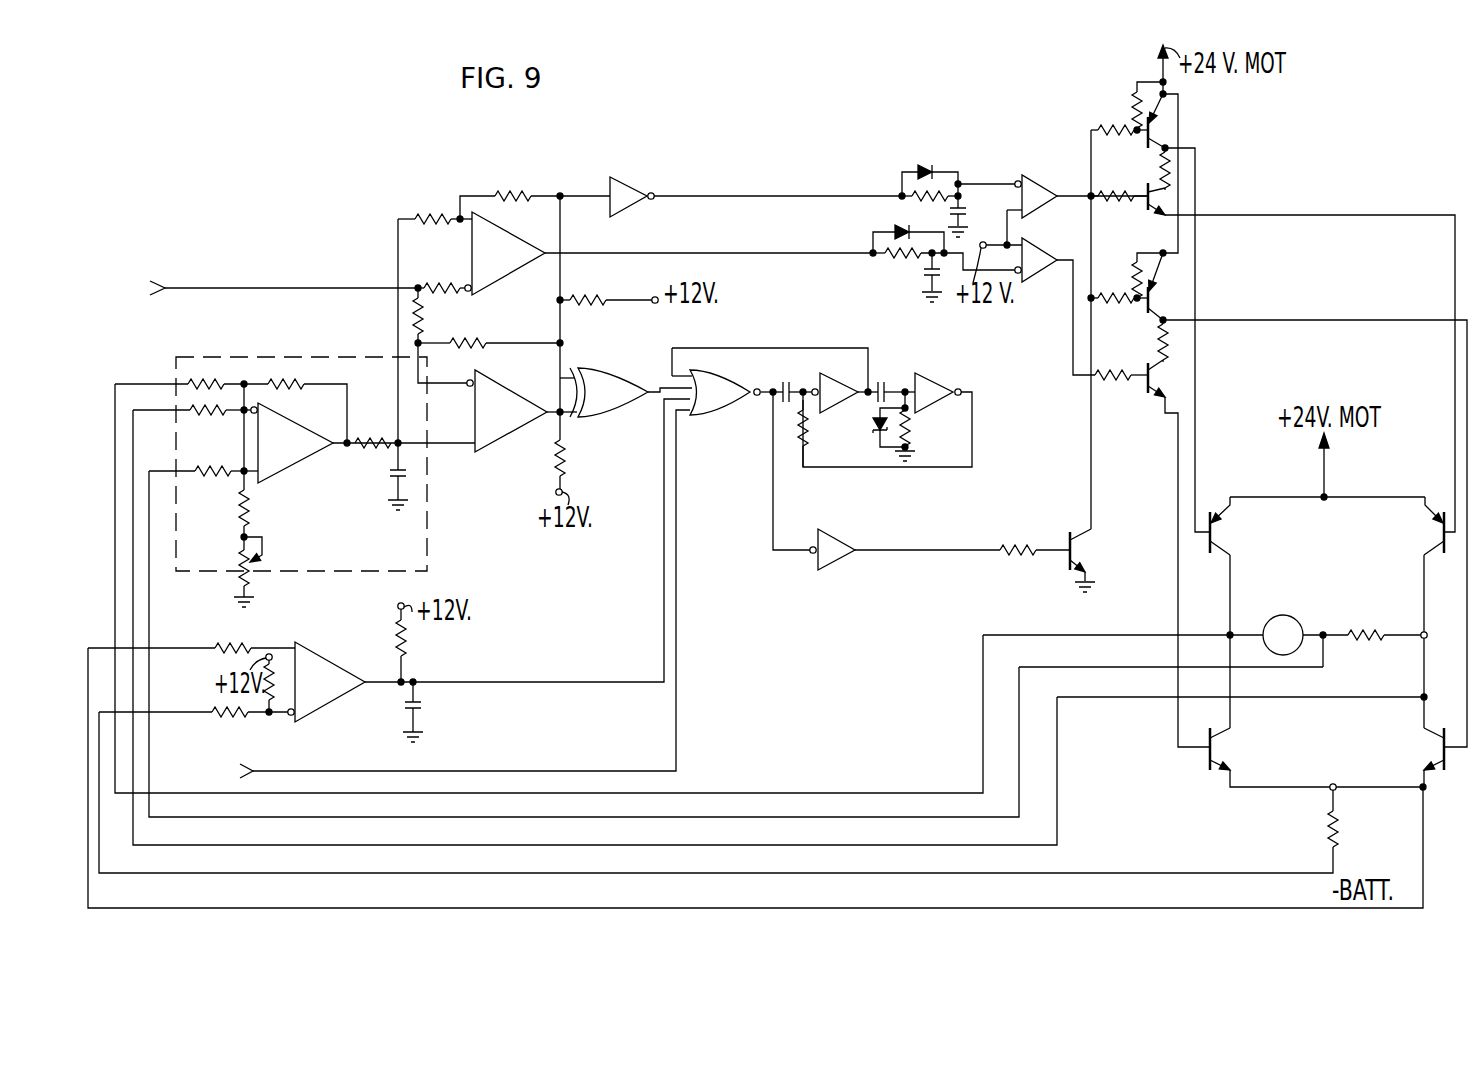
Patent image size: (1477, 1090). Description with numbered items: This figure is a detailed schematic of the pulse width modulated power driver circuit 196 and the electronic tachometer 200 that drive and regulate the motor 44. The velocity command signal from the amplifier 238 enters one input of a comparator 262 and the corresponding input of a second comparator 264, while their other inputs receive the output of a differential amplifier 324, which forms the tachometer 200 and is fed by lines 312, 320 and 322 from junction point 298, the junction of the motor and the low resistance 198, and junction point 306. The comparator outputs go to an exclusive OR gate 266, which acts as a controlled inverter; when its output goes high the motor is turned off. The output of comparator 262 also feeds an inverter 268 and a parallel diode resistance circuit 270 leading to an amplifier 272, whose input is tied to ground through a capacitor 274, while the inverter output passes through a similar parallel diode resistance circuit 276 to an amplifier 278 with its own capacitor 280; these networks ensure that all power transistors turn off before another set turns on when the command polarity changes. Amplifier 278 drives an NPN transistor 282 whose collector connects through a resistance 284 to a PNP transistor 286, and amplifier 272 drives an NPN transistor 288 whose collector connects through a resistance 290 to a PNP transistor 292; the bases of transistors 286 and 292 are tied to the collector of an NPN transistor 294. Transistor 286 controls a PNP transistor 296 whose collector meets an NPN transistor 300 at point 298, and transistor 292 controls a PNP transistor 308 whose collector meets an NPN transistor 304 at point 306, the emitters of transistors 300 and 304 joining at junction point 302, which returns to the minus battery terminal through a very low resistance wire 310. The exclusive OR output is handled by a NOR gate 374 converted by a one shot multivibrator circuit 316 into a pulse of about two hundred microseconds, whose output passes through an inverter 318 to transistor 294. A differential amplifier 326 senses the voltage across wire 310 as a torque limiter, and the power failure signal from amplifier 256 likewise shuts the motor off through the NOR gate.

The motor 44 is at (1297, 624).
The pulse width modulated power driver circuit 196 is at (1021, 351).
The low resistance 198 is at (1373, 642).
The electronic tachometer 200 is at (357, 357).
The amplifier 238 is at (256, 291).
The amplifier 256 is at (422, 602).
The comparator 262 is at (522, 268).
The second comparator 264 is at (525, 435).
The exclusive OR gate 266 is at (634, 413).
The inverter 268 is at (626, 194).
The parallel diode resistance circuit 270 is at (891, 265).
The amplifier 272 is at (1047, 271).
The capacitor 274 is at (930, 277).
The parallel diode resistance circuit 276 is at (928, 145).
The amplifier 278 is at (1044, 180).
The capacitor 280 is at (965, 205).
The NPN transistor 282 is at (1119, 175).
The resistance 284 is at (1168, 172).
The PNP transistor 286 is at (1160, 131).
The NPN transistor 288 is at (1142, 387).
The resistance 290 is at (1170, 345).
The PNP transistor 292 is at (1160, 302).
The NPN transistor 294 is at (1020, 549).
The PNP transistor 296 is at (1220, 532).
The junction point 298 is at (1227, 633).
The NPN transistor 300 is at (1218, 752).
The junction point 302 is at (1328, 791).
The NPN transistor 304 is at (1436, 752).
The junction point 306 is at (1421, 632).
The PNP transistor 308 is at (1434, 532).
The very low resistance wire 310 is at (1337, 829).
The line 312 is at (998, 632).
The one shot multi-vibrator circuit 316 is at (891, 377).
The inverter 318 is at (837, 537).
The line 320 is at (1037, 668).
The line 322 is at (1080, 700).
The differential amplifier 324 is at (306, 462).
The differential amplifier 326 is at (344, 702).
The NOR gate 374 is at (742, 413).